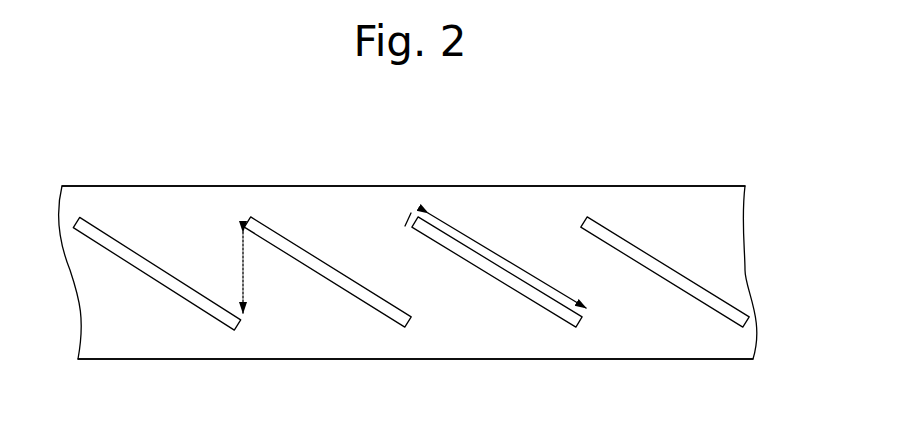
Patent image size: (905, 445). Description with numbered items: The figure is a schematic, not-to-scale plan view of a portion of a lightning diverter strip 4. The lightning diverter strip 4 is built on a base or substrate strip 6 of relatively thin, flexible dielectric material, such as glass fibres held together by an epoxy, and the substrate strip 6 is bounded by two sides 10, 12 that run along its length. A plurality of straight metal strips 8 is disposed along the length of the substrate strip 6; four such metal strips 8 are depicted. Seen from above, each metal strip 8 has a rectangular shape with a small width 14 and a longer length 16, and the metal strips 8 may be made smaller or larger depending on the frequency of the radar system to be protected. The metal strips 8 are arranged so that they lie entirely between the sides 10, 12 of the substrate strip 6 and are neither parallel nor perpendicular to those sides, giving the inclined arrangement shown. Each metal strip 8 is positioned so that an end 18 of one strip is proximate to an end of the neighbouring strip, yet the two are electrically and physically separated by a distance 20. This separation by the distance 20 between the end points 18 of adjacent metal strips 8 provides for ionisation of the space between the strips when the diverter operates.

The lightning diverter strip 4 is at (660, 186).
The substrate strip 6 is at (171, 218).
The metal strips 8 is at (171, 291).
The side of the substrate strip 10 is at (118, 184).
The side of the substrate strip 12 is at (120, 361).
The width 14 is at (408, 215).
The length 16 is at (490, 250).
The end of a metal strip 18 is at (246, 221).
The distance 20 is at (245, 277).